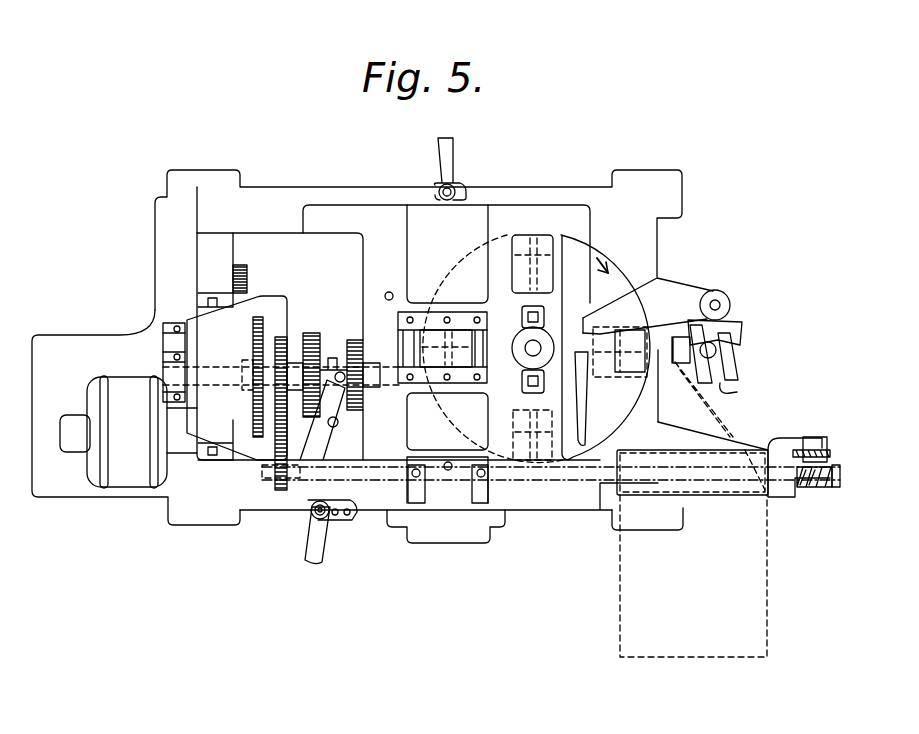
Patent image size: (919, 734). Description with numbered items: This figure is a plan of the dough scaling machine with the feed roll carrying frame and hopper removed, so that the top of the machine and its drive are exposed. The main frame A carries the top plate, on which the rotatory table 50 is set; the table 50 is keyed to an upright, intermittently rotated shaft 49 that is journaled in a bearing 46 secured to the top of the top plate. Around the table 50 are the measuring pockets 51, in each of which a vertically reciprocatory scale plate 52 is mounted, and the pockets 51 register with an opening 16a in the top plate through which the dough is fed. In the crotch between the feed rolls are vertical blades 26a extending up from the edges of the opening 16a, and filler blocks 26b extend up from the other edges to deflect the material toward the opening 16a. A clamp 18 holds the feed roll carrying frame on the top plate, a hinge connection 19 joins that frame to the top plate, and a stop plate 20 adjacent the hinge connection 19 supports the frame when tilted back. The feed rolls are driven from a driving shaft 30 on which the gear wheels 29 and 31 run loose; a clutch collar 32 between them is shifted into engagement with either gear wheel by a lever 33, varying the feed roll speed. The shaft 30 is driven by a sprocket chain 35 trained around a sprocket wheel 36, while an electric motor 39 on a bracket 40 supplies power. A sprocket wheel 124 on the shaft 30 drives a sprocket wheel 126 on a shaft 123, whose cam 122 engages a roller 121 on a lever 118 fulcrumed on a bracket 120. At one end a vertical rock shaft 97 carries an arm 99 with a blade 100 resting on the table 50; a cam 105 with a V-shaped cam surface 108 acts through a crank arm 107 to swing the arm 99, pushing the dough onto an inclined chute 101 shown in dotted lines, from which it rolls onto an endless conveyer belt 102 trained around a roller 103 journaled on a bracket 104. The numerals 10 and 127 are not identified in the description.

The main frame A is at (343, 157).
The frame 10 is at (418, 328).
The clamp 18 is at (464, 165).
The pin 127 is at (419, 272).
The scale plate 52 is at (534, 306).
The vertical blades 26a is at (442, 359).
The measuring pockets 51 is at (551, 368).
The filler blocks 26b is at (453, 377).
The upright intermittently rotated shaft 49 is at (552, 331).
The rotatory table 50 is at (562, 349).
The vertical rock shaft 97 is at (724, 287).
The arm 99 is at (648, 306).
The crank arm 107 is at (725, 362).
The cam 105 is at (741, 354).
The V-shaped cam surface 108 is at (755, 390).
The inclined chute 101 is at (719, 426).
The roller 103 is at (793, 448).
The bracket 120 is at (842, 436).
The lever 118 is at (848, 446).
The roller 121 is at (845, 471).
The shaft 123 is at (632, 523).
The cam 122 is at (831, 495).
The bracket 104 is at (551, 493).
The endless conveyer belt 102 is at (726, 576).
The blade 100 is at (615, 398).
The bearing 46 is at (517, 385).
The opening 16a is at (447, 425).
The stop plate 20 is at (466, 544).
The hinge connection 19 is at (447, 518).
The lever 33 is at (321, 553).
The sprocket wheel 126 is at (271, 509).
The sprocket wheel 124 is at (286, 373).
The gear wheel 29 is at (309, 349).
The clutch collar 32 is at (323, 381).
The gear wheel 31 is at (361, 398).
The sprocket wheel 36 is at (237, 378).
The sprocket chain 35 is at (233, 393).
The driving shaft 30 is at (281, 387).
The bracket 40 is at (136, 417).
The electric motor 39 is at (128, 432).